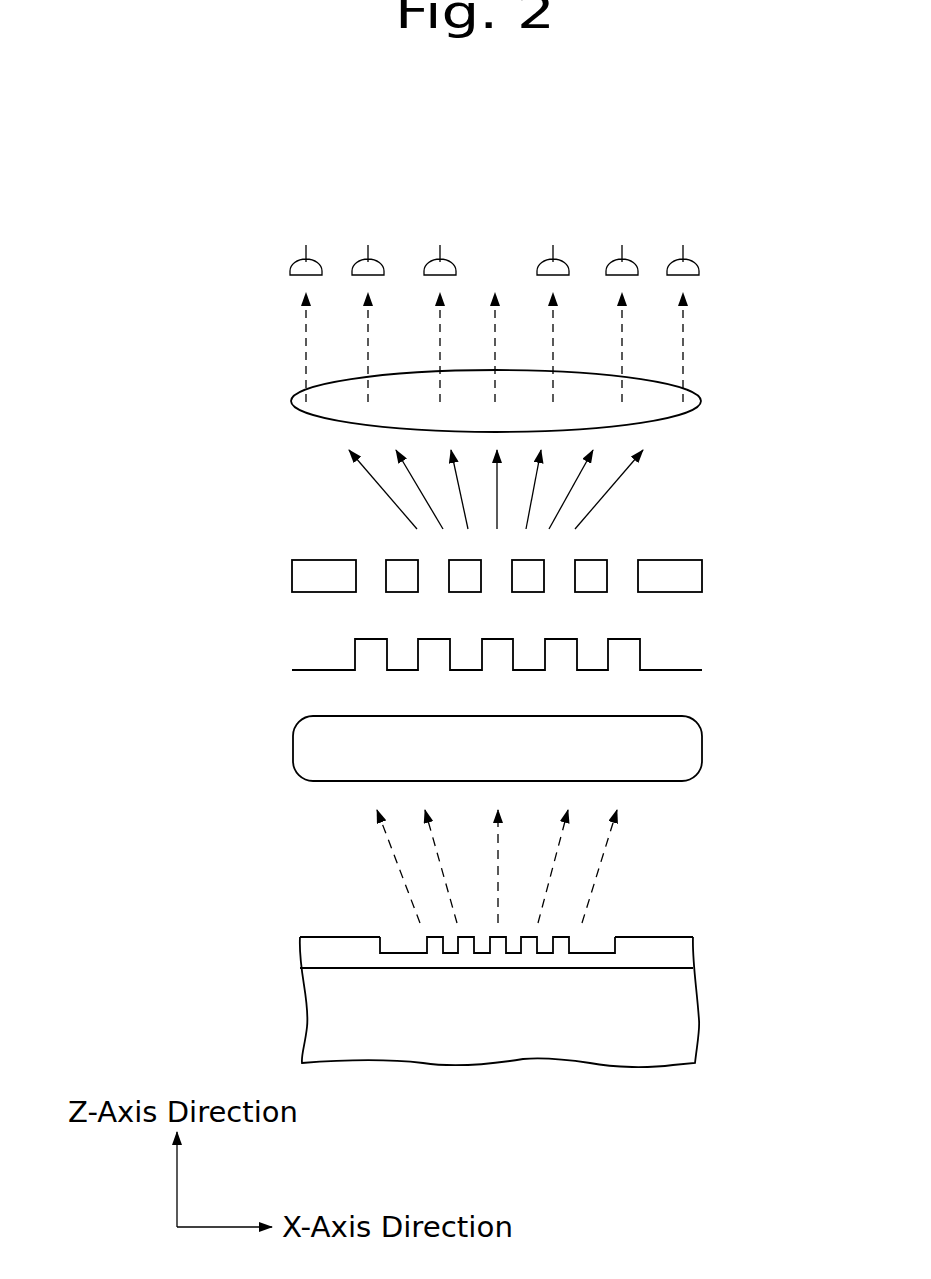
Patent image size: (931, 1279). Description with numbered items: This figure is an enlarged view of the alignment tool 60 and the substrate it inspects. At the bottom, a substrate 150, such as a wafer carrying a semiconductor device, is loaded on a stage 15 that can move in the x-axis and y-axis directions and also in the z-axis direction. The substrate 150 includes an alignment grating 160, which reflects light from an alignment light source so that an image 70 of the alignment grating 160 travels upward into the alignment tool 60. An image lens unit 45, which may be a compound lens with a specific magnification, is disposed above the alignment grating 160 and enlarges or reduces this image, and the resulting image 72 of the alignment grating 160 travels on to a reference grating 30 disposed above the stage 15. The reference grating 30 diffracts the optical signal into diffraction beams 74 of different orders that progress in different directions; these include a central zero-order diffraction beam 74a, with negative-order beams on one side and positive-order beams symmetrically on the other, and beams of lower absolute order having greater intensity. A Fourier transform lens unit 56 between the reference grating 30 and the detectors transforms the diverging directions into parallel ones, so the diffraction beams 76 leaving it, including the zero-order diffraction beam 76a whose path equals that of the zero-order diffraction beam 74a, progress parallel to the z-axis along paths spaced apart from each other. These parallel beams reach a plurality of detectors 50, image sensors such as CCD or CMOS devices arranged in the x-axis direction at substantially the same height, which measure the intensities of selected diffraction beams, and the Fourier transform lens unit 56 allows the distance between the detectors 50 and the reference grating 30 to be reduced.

The stage 15 is at (686, 1024).
The substrate 150 is at (683, 950).
The alignment grating 160 is at (577, 937).
The image of the alignment grating 70 is at (400, 870).
The image lens unit 45 is at (693, 748).
The image of the alignment grating passing through the image lens unit 72 is at (290, 650).
The reference grating 30 is at (290, 575).
The diffraction beams 74 is at (375, 495).
The zero-order diffraction beam 74a is at (497, 488).
The Fourier transform lens unit 56 is at (658, 407).
The diffraction beams passing through the Fourier transform lens unit 76 is at (290, 348).
The zero-order diffraction beam passing through the Fourier transform lens unit 76a is at (495, 324).
The detectors 50 is at (290, 272).
The alignment tool 60 is at (138, 521).